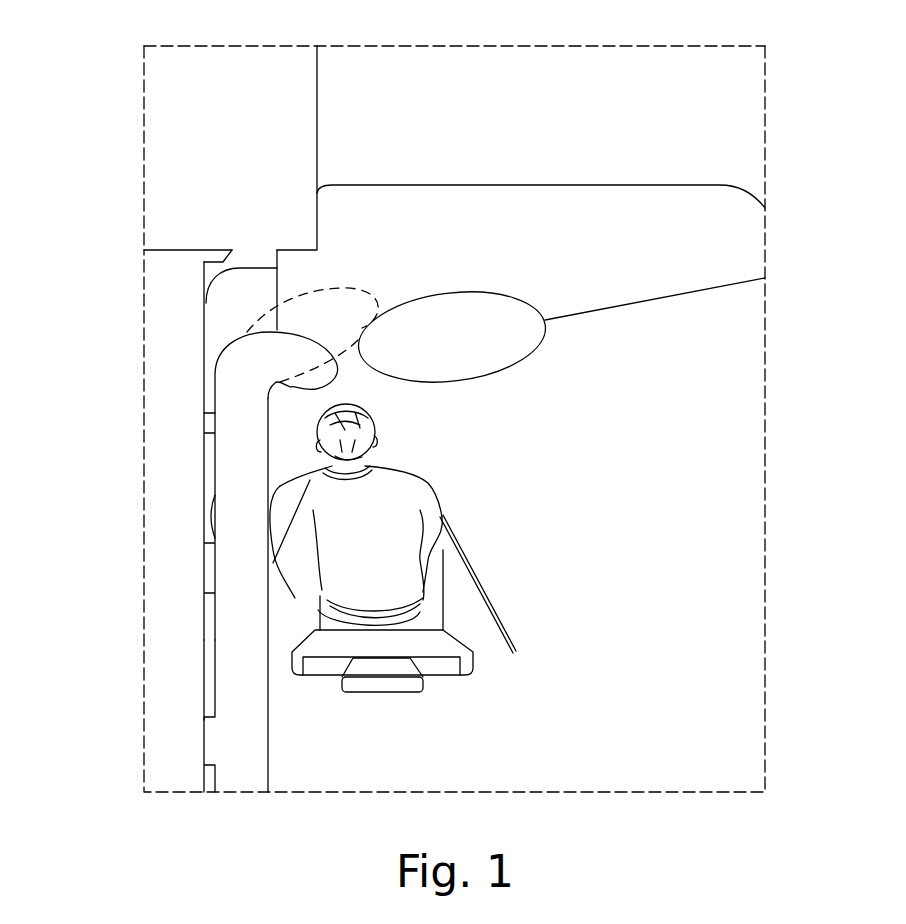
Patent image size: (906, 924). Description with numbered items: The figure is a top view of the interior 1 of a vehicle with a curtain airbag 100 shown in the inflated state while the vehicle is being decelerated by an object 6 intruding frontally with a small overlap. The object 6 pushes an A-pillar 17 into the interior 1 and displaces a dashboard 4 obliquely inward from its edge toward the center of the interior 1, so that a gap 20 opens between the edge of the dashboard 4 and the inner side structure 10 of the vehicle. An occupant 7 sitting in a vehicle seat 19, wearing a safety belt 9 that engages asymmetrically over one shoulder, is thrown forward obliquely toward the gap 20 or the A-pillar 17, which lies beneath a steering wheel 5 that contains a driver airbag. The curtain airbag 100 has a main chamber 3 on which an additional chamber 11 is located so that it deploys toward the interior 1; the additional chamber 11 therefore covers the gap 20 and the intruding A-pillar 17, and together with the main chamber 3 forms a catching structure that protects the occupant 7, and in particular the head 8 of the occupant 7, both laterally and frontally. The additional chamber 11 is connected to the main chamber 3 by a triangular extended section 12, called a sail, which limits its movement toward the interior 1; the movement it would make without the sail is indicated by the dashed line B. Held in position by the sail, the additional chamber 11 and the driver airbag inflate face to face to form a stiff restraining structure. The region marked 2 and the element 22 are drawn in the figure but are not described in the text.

The interior 1 is at (627, 483).
The ceiling space 2 is at (454, 115).
The main chamber 3 is at (243, 695).
The dashboard 4 is at (617, 210).
The steering wheel 5 is at (470, 310).
The object 6 is at (310, 89).
The occupant 7 is at (410, 493).
The head 8 is at (372, 425).
The safety belt 9 is at (275, 560).
The inner side structure 10 is at (204, 642).
The additional chamber 11 is at (287, 343).
The triangular extended section 12 is at (278, 398).
The A-pillar 17 is at (255, 258).
The vehicle seat 19 is at (437, 668).
The gap 20 is at (220, 310).
The air flow arrow 22 is at (286, 397).
The curtain airbag 100 is at (233, 563).
The dashed line B is at (373, 293).